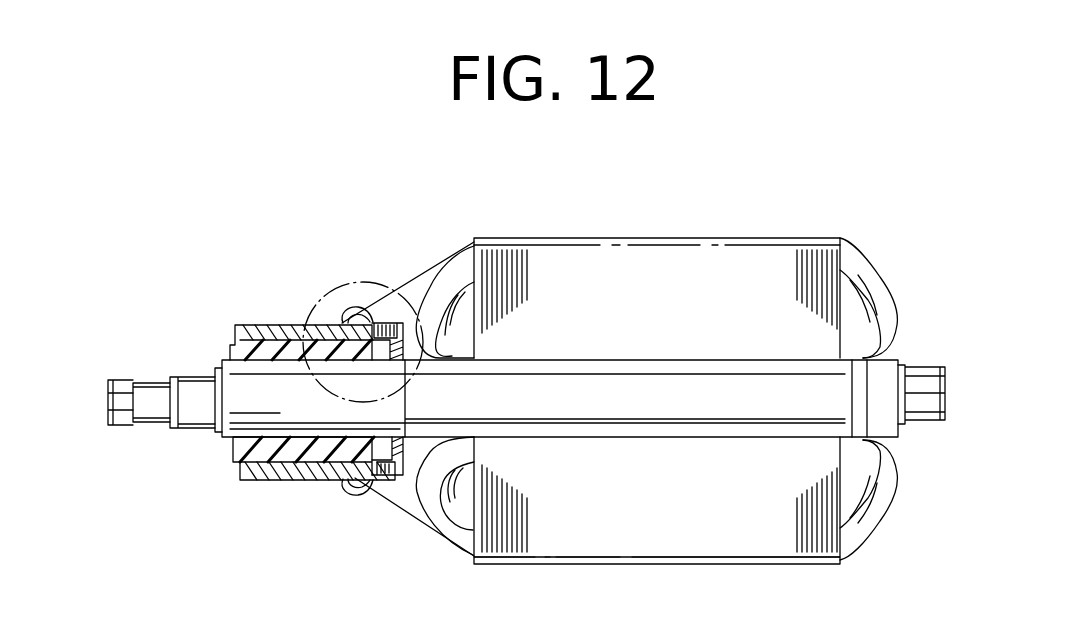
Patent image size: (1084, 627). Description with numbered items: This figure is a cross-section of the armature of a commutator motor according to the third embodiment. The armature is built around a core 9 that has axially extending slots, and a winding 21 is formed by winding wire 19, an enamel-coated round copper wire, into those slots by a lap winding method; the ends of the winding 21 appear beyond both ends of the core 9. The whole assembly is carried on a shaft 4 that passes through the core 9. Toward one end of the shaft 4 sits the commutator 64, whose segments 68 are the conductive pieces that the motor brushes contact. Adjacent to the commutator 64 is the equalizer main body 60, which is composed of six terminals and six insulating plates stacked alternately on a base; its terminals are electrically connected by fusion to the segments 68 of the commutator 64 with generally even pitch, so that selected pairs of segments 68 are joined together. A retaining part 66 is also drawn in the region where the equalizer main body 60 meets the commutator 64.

The rotor shaft 4 is at (246, 395).
The core 9 is at (653, 262).
The wire 19 is at (420, 333).
The winding 21 is at (877, 302).
The equalizer main body 60 is at (390, 320).
The commutator 64 is at (260, 393).
The retaining clip 66 is at (346, 308).
The segments 68 is at (263, 325).